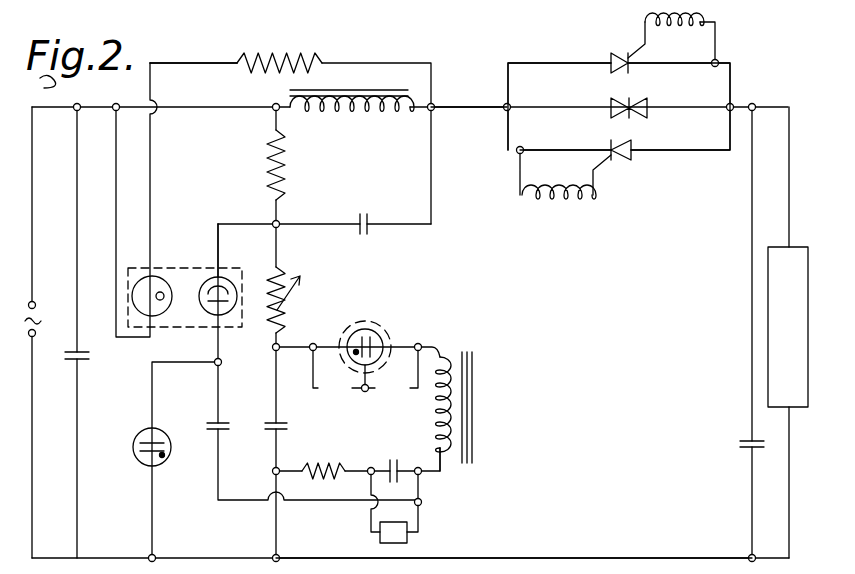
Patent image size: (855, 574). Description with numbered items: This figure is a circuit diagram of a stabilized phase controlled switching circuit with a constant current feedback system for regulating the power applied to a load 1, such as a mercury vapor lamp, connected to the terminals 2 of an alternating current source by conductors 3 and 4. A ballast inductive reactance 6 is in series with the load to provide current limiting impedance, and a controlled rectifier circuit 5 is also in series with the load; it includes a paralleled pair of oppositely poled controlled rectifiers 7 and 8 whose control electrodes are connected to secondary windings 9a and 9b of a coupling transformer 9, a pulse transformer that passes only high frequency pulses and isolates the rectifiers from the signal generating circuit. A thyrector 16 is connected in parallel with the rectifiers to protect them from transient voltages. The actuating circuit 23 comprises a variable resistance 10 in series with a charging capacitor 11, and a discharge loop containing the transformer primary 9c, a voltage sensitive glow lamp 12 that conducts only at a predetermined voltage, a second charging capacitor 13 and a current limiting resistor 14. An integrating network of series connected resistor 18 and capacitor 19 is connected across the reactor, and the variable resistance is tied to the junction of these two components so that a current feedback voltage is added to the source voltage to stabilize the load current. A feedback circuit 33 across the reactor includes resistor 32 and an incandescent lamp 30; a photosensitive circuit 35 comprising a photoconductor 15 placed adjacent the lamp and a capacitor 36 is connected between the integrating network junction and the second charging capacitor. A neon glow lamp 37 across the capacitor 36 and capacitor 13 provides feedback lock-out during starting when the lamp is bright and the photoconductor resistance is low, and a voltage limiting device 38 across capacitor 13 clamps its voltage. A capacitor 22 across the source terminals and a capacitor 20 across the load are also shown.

The load 1 is at (822, 247).
The terminals 2 is at (36, 305).
The conductor 3 is at (465, 106).
The conductor 4 is at (535, 558).
The controlled rectifier circuit 5 is at (754, 82).
The ballast inductive reactance 6 is at (378, 88).
The controlled rectifier 7 is at (621, 78).
The controlled rectifier 8 is at (620, 163).
The coupling transformer 9 is at (472, 473).
The secondary winding 9a is at (560, 200).
The secondary winding 9b is at (700, 14).
The transformer primary 9c is at (438, 431).
The variable resistance 10 is at (296, 292).
The charging capacitor 11 is at (274, 415).
The voltage sensitive device 12 is at (388, 332).
The second charging capacitor 13 is at (394, 465).
The current limiting resistor 14 is at (320, 469).
The photoconductor 15 is at (204, 280).
The thyrector 16 is at (635, 118).
The resistor 18 is at (287, 162).
The capacitor 19 is at (369, 232).
The capacitor 20 is at (747, 448).
The capacitor 22 is at (84, 360).
The actuating circuit 23 is at (476, 336).
The incandescent lamp 30 is at (142, 276).
The resistor 32 is at (306, 49).
The feedback circuit 33 is at (178, 63).
The photosensitive circuit 35 is at (218, 222).
The capacitor 36 is at (214, 415).
The neon glow lamp 37 is at (137, 455).
The voltage limiting device 38 is at (408, 538).